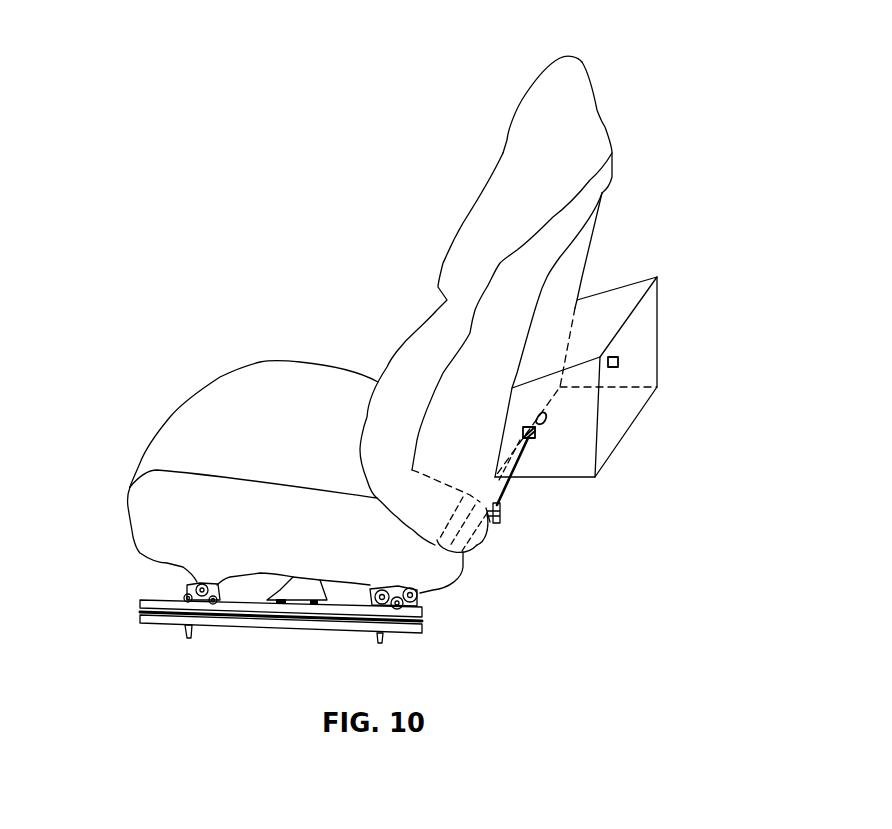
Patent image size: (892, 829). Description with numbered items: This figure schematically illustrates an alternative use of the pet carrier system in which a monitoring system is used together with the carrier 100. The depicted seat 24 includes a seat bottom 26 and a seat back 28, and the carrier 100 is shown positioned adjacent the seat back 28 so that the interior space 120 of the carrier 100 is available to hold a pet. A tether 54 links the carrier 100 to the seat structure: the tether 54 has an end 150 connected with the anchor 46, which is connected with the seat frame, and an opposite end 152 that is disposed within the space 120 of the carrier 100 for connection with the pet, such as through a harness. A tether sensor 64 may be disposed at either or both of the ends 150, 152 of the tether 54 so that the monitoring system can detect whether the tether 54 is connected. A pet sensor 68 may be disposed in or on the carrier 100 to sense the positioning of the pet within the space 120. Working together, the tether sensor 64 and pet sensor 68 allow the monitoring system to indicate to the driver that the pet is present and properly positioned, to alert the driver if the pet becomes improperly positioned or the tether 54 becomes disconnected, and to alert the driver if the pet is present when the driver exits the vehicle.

The seat 24 is at (610, 40).
The seat bottom 26 is at (292, 378).
The seat back 28 is at (585, 110).
The anchor 46 is at (492, 522).
The tether 54 is at (530, 445).
The tether sensor 64 is at (535, 432).
The pet sensor 68 is at (620, 360).
The carrier 100 is at (635, 281).
The space 120 is at (640, 378).
The end 150 is at (500, 513).
The end 152 is at (536, 418).